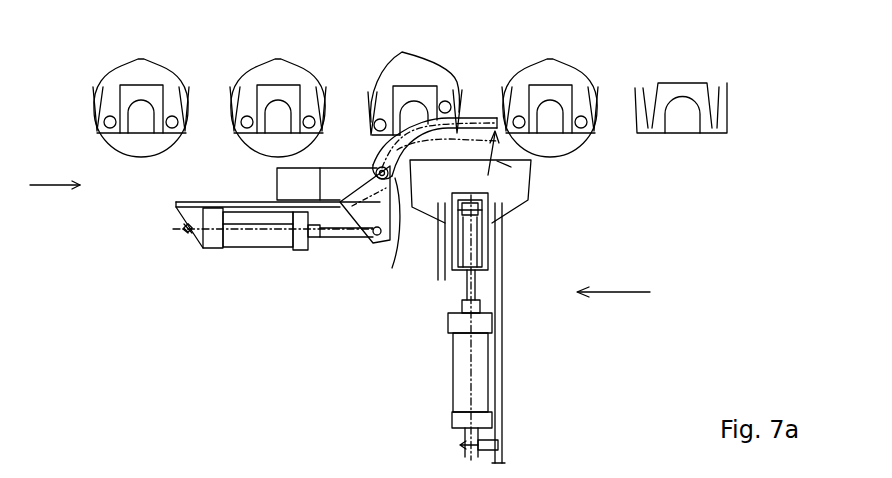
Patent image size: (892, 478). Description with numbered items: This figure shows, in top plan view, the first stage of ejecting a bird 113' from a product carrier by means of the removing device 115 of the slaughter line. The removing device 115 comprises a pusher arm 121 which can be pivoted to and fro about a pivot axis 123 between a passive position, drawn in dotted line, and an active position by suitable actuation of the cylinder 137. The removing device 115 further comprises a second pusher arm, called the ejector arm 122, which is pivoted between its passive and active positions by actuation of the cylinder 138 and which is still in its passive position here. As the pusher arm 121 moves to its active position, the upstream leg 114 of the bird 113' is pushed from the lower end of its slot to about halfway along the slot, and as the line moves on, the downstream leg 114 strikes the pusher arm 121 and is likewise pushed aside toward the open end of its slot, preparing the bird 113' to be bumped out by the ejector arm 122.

The bird 113' is at (435, 78).
The leg 114 is at (106, 125).
The removing device 115 is at (636, 298).
The pusher arm 121 is at (478, 118).
The ejector arm 122 is at (522, 187).
The pivot axis 123 is at (389, 182).
The cylinder 137 is at (249, 245).
The cylinder 138 is at (456, 390).